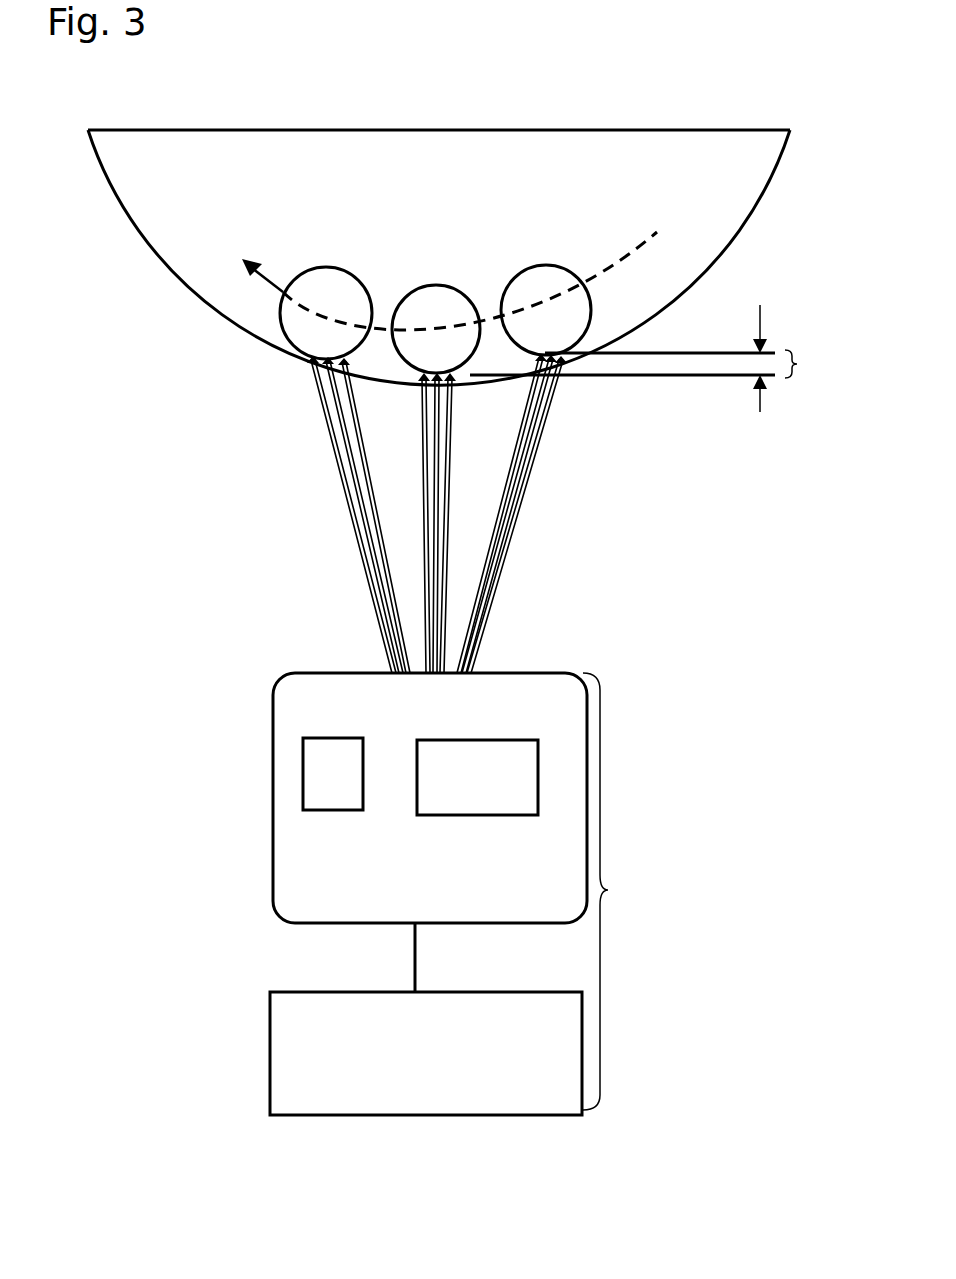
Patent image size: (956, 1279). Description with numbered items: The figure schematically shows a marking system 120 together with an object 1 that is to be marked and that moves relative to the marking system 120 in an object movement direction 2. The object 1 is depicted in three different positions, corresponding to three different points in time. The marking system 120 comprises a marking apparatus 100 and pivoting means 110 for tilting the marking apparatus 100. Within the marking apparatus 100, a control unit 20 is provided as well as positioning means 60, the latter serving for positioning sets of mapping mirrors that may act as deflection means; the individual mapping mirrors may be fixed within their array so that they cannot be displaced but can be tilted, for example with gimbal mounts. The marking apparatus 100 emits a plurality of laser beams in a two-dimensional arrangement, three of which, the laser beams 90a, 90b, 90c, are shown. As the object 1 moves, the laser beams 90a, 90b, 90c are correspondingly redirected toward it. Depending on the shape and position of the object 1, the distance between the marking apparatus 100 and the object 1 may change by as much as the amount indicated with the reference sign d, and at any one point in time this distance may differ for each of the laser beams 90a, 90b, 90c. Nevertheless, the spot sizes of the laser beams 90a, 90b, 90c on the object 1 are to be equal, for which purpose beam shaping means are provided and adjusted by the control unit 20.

The object 1 is at (332, 293).
The object movement direction 2 is at (288, 292).
The control unit 20 is at (455, 785).
The positioning means 60 is at (312, 783).
The laser beam 90a is at (377, 548).
The laser beam 90b is at (350, 493).
The laser beam 90c is at (332, 434).
The marking apparatus 100 is at (440, 875).
The pivoting means 110 is at (435, 1053).
The marking system 120 is at (628, 891).
The distance change d is at (647, 358).